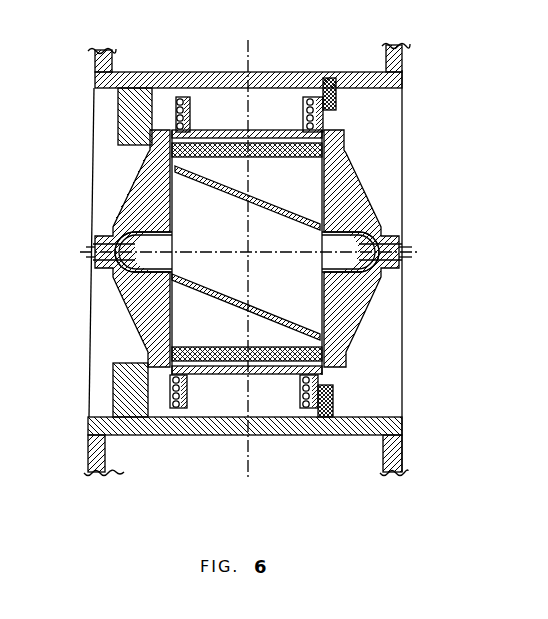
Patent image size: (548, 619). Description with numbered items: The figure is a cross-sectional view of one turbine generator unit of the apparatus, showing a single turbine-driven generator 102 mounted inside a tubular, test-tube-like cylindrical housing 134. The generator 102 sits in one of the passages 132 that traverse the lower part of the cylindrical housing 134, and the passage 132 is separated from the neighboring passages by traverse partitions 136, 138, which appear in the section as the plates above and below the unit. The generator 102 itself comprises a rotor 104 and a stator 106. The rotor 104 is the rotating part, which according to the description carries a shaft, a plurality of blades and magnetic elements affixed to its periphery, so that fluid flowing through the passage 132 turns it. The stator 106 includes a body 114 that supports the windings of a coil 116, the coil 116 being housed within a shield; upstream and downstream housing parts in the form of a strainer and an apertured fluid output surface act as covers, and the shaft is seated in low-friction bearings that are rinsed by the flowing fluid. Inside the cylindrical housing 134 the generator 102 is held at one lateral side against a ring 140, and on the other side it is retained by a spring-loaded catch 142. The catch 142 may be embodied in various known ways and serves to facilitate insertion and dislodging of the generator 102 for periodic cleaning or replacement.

The turbine-driven generator 102 is at (364, 156).
The rotor 104 is at (224, 241).
The stator 106 is at (226, 123).
The body 114 is at (305, 100).
The coil 116 is at (180, 97).
The passage 132 is at (402, 170).
The cylindrical housing 134 is at (402, 56).
The traverse partition 136 is at (128, 72).
The traverse partition 138 is at (142, 437).
The ring 140 is at (118, 110).
The spring-loaded catch 142 is at (336, 98).